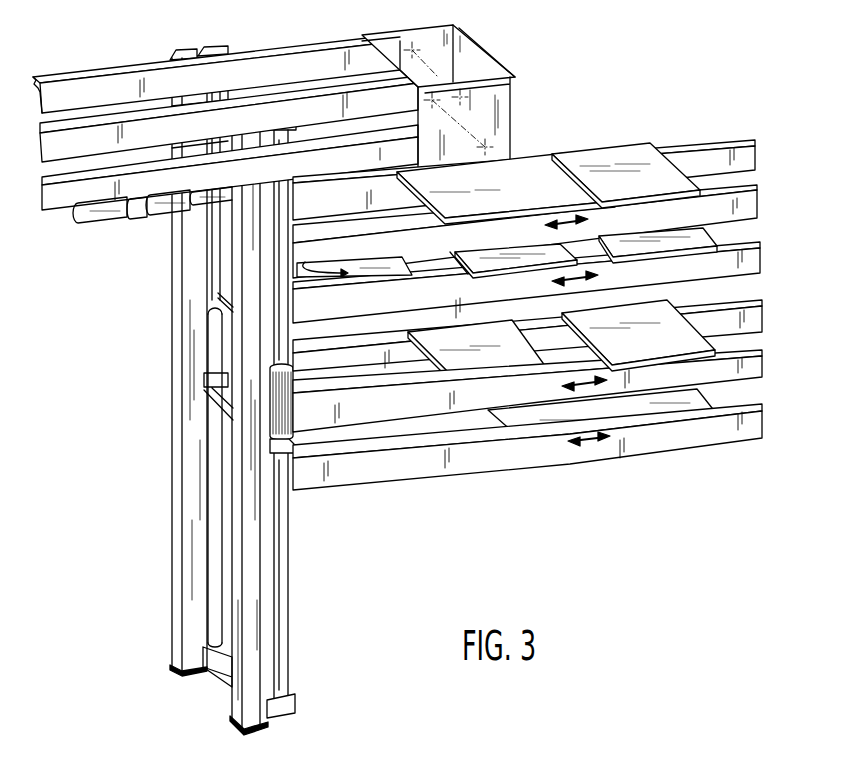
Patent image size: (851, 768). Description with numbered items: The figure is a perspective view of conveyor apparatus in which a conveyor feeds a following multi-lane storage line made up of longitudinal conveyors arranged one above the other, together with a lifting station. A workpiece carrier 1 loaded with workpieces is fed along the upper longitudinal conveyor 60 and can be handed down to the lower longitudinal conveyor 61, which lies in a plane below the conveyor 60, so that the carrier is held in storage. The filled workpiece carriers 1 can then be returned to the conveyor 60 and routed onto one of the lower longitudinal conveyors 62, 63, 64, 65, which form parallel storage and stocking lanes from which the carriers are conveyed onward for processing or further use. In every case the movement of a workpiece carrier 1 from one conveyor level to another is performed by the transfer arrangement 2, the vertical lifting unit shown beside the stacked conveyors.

The workpiece carrier 1 is at (618, 158).
The transfer arrangement 2 is at (293, 458).
The upper longitudinal conveyor 60 is at (82, 140).
The lower longitudinal conveyor 61 is at (74, 192).
The lower longitudinal conveyor 62 is at (745, 200).
The lower longitudinal conveyor 63 is at (682, 266).
The lower longitudinal conveyor 64 is at (470, 402).
The lower longitudinal conveyor 65 is at (730, 427).